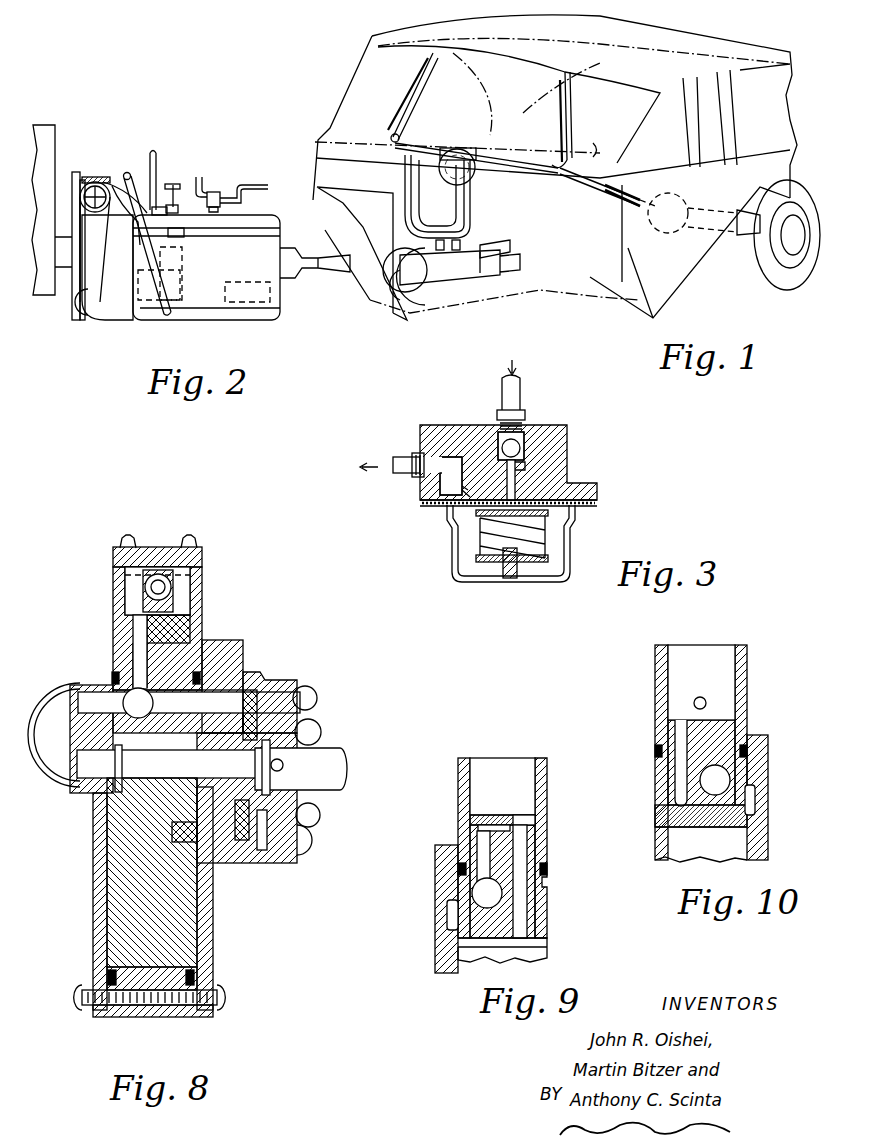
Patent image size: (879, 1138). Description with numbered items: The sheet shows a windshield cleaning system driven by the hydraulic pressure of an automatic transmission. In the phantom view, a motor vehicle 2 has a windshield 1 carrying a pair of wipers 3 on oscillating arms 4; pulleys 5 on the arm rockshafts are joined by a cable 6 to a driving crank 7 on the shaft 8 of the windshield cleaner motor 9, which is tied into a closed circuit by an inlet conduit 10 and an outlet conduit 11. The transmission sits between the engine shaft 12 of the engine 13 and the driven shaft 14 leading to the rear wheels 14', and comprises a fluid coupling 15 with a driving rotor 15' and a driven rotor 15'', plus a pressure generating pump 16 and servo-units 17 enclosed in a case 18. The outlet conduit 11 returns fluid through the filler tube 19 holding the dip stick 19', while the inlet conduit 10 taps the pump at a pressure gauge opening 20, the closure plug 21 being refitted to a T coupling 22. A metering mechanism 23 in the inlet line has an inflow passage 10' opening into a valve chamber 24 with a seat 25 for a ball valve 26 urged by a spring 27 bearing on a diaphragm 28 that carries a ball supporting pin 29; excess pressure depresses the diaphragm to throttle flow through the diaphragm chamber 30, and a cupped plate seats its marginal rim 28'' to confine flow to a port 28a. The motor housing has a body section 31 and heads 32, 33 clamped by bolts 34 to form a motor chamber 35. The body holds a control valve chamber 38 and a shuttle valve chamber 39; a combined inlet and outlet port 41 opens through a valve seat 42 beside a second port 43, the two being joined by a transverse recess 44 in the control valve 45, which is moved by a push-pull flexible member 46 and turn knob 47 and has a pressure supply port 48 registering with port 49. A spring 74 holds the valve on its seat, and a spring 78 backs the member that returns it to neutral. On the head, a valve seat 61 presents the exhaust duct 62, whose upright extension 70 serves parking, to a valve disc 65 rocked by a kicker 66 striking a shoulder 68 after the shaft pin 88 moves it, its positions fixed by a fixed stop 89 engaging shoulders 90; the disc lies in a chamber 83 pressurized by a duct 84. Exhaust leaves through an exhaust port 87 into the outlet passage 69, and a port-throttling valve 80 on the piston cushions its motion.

In FIG. 1, the windshield 1 is at (503, 75).
In FIG. 1, the motor vehicle 2 is at (724, 212).
In FIG. 1, the wipers 3 is at (432, 62).
In FIG. 1, the oscillating arms 4 is at (410, 104).
In FIG. 1, the pulleys 5 is at (590, 166).
In FIG. 1, the cable 6 is at (512, 171).
In FIG. 1, the driving crank 7 is at (462, 148).
In FIG. 8, the motor shaft 8 is at (347, 766).
In FIG. 1, the windshield cleaner motor 9 is at (472, 180).
In FIG. 8, the windshield cleaner motor 9 is at (218, 575).
In FIG. 1, the inlet conduit 10 is at (439, 196).
In FIG. 2, the inlet conduit 10 is at (250, 191).
In FIG. 3, the inlet conduit 10 is at (389, 449).
In FIG. 2, the inflow passage 10' is at (227, 165).
In FIG. 3, the inflow passage 10' is at (489, 402).
In FIG. 1, the outlet conduit 11 is at (462, 222).
In FIG. 2, the outlet conduit 11 is at (158, 158).
In FIG. 2, the engine shaft 12 is at (62, 250).
In FIG. 2, the engine 13 is at (58, 130).
In FIG. 1, the driven shaft 14 is at (621, 283).
In FIG. 2, the driven shaft 14 is at (315, 286).
In FIG. 1, the rear wheels 14' is at (766, 240).
In FIG. 2, the fluid coupling 15 is at (100, 229).
In FIG. 2, the driving rotor 15' is at (78, 191).
In FIG. 2, the driven rotor 15'' is at (125, 211).
In FIG. 2, the pressure generating pump 16 is at (183, 260).
In FIG. 2, the servo-units 17 is at (136, 285).
In FIG. 1, the case 18 is at (470, 279).
In FIG. 2, the case 18 is at (206, 267).
In FIG. 1, the filler tube 19 is at (411, 281).
In FIG. 2, the filler tube 19 is at (147, 212).
In FIG. 2, the dip stick 19' is at (148, 221).
In FIG. 2, the pressure gauge opening 20 is at (186, 235).
In FIG. 2, the closure plug 21 is at (176, 185).
In FIG. 2, the T coupling 22 is at (166, 213).
In FIG. 1, the metering mechanism 23 is at (500, 248).
In FIG. 2, the metering mechanism 23 is at (222, 192).
In FIG. 3, the metering mechanism 23 is at (586, 474).
In FIG. 3, the valve chamber 24 is at (524, 438).
In FIG. 3, the seat 25 is at (520, 465).
In FIG. 3, the ball valve 26 is at (511, 447).
In FIG. 3, the spring 27 is at (455, 528).
In FIG. 3, the diaphragm 28 is at (453, 544).
In FIG. 3, the port 28a is at (420, 503).
In FIG. 3, the marginal rim 28'' is at (626, 498).
In FIG. 3, the ball supporting pin 29 is at (517, 475).
In FIG. 3, the diaphragm chamber 30 is at (420, 494).
In FIG. 8, the body section 31 is at (185, 650).
In FIG. 9, the body section 31 is at (548, 914).
In FIG. 10, the body section 31 is at (655, 682).
In FIG. 8, the head 32 is at (93, 910).
In FIG. 9, the head 32 is at (435, 965).
In FIG. 10, the head 32 is at (768, 838).
In FIG. 8, the head 33 is at (215, 928).
In FIG. 8, the bolts 34 is at (222, 990).
In FIG. 9, the motor chamber 35 is at (540, 948).
In FIG. 10, the motor chamber 35 is at (701, 844).
In FIG. 8, the control valve chamber 38 is at (113, 570).
In FIG. 9, the control valve chamber 38 is at (502, 786).
In FIG. 10, the control valve chamber 38 is at (701, 682).
In FIG. 8, the shuttle valve chamber 39 is at (138, 703).
In FIG. 9, the shuttle valve chamber 39 is at (487, 893).
In FIG. 10, the shuttle valve chamber 39 is at (715, 780).
In FIG. 9, the combined inlet and outlet port 41 is at (540, 858).
In FIG. 9, the valve seat 42 is at (515, 826).
In FIG. 10, the valve seat 42 is at (712, 718).
In FIG. 9, the second port 43 is at (482, 838).
In FIG. 9, the transverse recess 44 is at (502, 808).
In FIG. 8, the control valve 45 is at (190, 630).
In FIG. 9, the control valve 45 is at (478, 826).
In FIG. 1, the push-pull flexible member 46 is at (606, 188).
In FIG. 1, the turn knob 47 is at (664, 213).
In FIG. 8, the pressure supply port 48 is at (137, 630).
In FIG. 8, the port 49 is at (137, 662).
In FIG. 8, the valve seat 61 is at (262, 855).
In FIG. 10, the exhaust duct 62 is at (660, 814).
In FIG. 8, the valve disc 65 is at (252, 712).
In FIG. 8, the kicker 66 is at (312, 735).
In FIG. 8, the shoulder 68 is at (310, 712).
In FIG. 8, the outlet passage 69 is at (90, 700).
In FIG. 9, the outlet passage 69 is at (446, 915).
In FIG. 10, the outlet passage 69 is at (757, 800).
In FIG. 10, the upright extension 70 is at (675, 738).
In FIG. 8, the spring 74 is at (202, 600).
In FIG. 8, the spring 78 is at (158, 572).
In FIG. 8, the port-throttling valve 80 is at (216, 862).
In FIG. 8, the chamber 83 is at (282, 700).
In FIG. 8, the duct 84 is at (222, 698).
In FIG. 8, the exhaust port 87 is at (62, 766).
In FIG. 8, the shaft pin 88 is at (285, 766).
In FIG. 8, the fixed stop 89 is at (315, 820).
In FIG. 8, the shoulders 90 is at (310, 838).